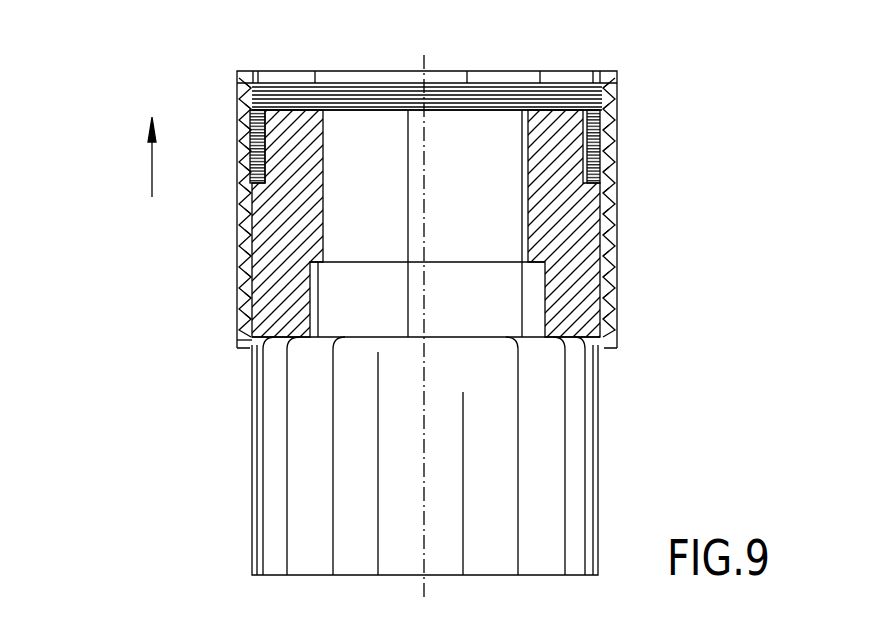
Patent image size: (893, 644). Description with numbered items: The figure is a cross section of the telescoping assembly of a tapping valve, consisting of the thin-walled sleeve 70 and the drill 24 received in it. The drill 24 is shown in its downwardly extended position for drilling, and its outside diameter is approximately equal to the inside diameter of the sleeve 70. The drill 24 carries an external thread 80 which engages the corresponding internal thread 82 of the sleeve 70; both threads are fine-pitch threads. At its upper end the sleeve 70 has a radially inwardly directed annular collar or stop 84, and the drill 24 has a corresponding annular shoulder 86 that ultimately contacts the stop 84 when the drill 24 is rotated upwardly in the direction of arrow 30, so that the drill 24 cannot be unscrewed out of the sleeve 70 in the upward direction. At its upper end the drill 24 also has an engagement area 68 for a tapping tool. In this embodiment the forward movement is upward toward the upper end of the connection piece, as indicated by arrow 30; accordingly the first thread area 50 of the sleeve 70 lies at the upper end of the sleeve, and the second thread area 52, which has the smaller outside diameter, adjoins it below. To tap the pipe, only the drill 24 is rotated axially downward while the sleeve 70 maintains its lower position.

The drill 24 is at (600, 450).
The arrow 30 is at (152, 173).
The first thread area 50 is at (233, 137).
The second thread area 52 is at (236, 286).
The engagement area 68 is at (493, 223).
The sleeve 70 is at (247, 335).
The external thread 80 is at (613, 293).
The internal thread 82 is at (603, 103).
The stop 84 is at (607, 71).
The annular shoulder 86 is at (613, 170).